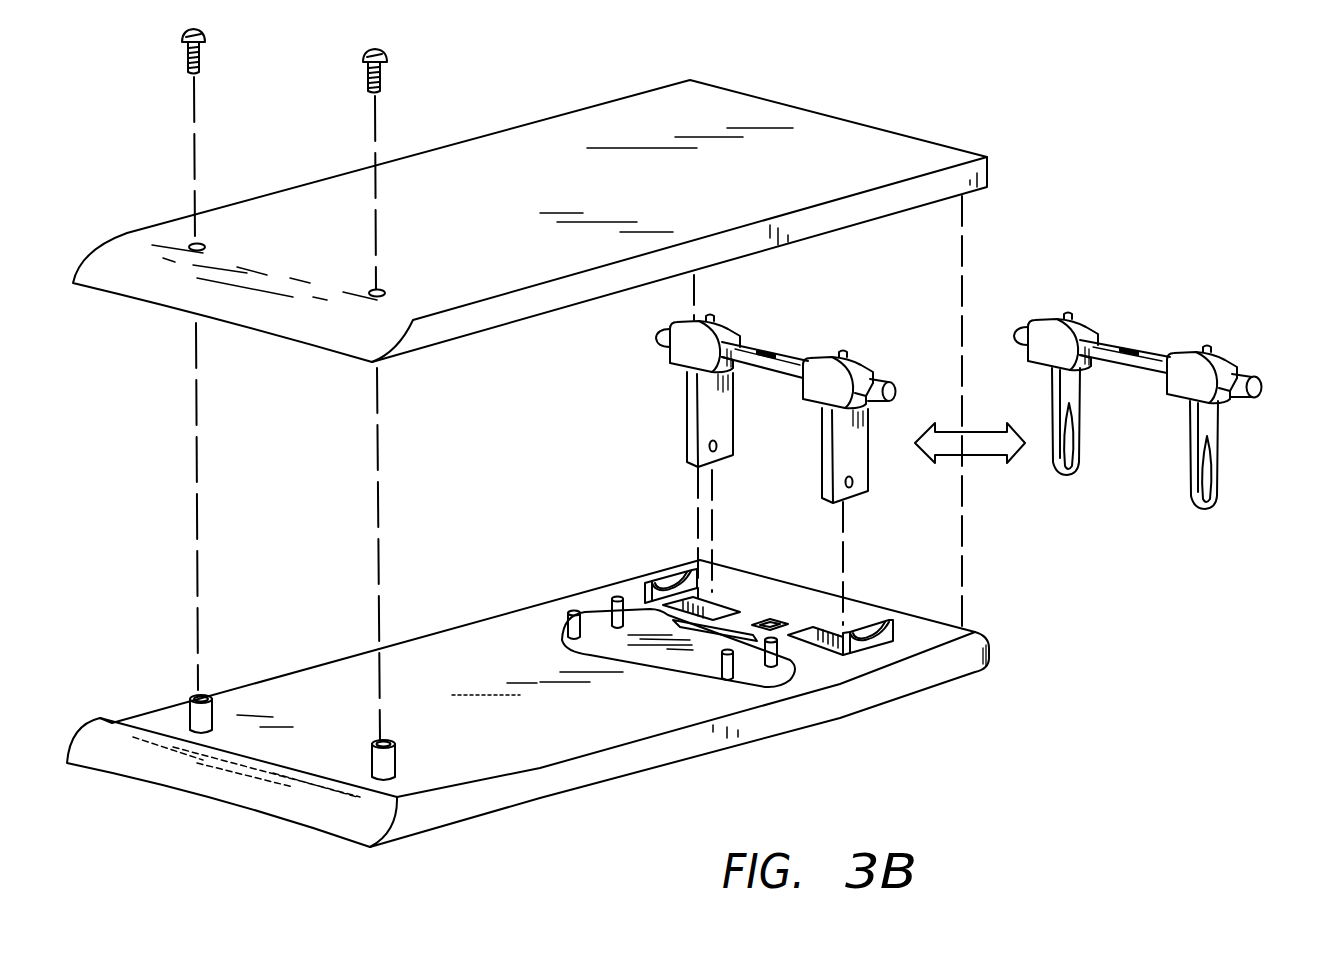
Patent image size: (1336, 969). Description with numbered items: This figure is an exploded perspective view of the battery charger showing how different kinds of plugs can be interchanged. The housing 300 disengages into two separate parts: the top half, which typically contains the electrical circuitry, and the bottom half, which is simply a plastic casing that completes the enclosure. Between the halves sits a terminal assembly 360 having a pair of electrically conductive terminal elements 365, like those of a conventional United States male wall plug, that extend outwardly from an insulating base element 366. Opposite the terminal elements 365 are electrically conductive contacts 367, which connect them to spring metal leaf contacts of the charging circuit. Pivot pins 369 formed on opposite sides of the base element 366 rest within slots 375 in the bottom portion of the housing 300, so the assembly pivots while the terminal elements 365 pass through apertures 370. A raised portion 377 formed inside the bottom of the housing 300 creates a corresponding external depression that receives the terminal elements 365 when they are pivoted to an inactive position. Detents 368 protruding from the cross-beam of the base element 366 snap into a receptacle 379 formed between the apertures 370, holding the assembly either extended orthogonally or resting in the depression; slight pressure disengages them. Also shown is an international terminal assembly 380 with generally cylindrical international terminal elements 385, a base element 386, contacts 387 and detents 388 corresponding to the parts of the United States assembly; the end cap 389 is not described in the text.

The housing 300 is at (820, 110).
The terminal assembly 360 is at (734, 398).
The terminal elements 365 is at (687, 453).
The insulating base element 366 is at (812, 388).
The electrically conductive contacts 367 is at (662, 332).
The detents 368 is at (757, 353).
The pivot pins 369 is at (893, 383).
The apertures 370 is at (827, 630).
The slots 375 is at (653, 573).
The raised portion 377 is at (673, 660).
The receptacle 379 is at (778, 630).
The international terminal assembly 380 is at (1173, 387).
The international terminal elements 385 is at (1220, 440).
The base element 386 is at (1193, 393).
The contacts 387 is at (1073, 315).
The detents 388 is at (1117, 367).
The rod end cap 389 is at (1243, 367).